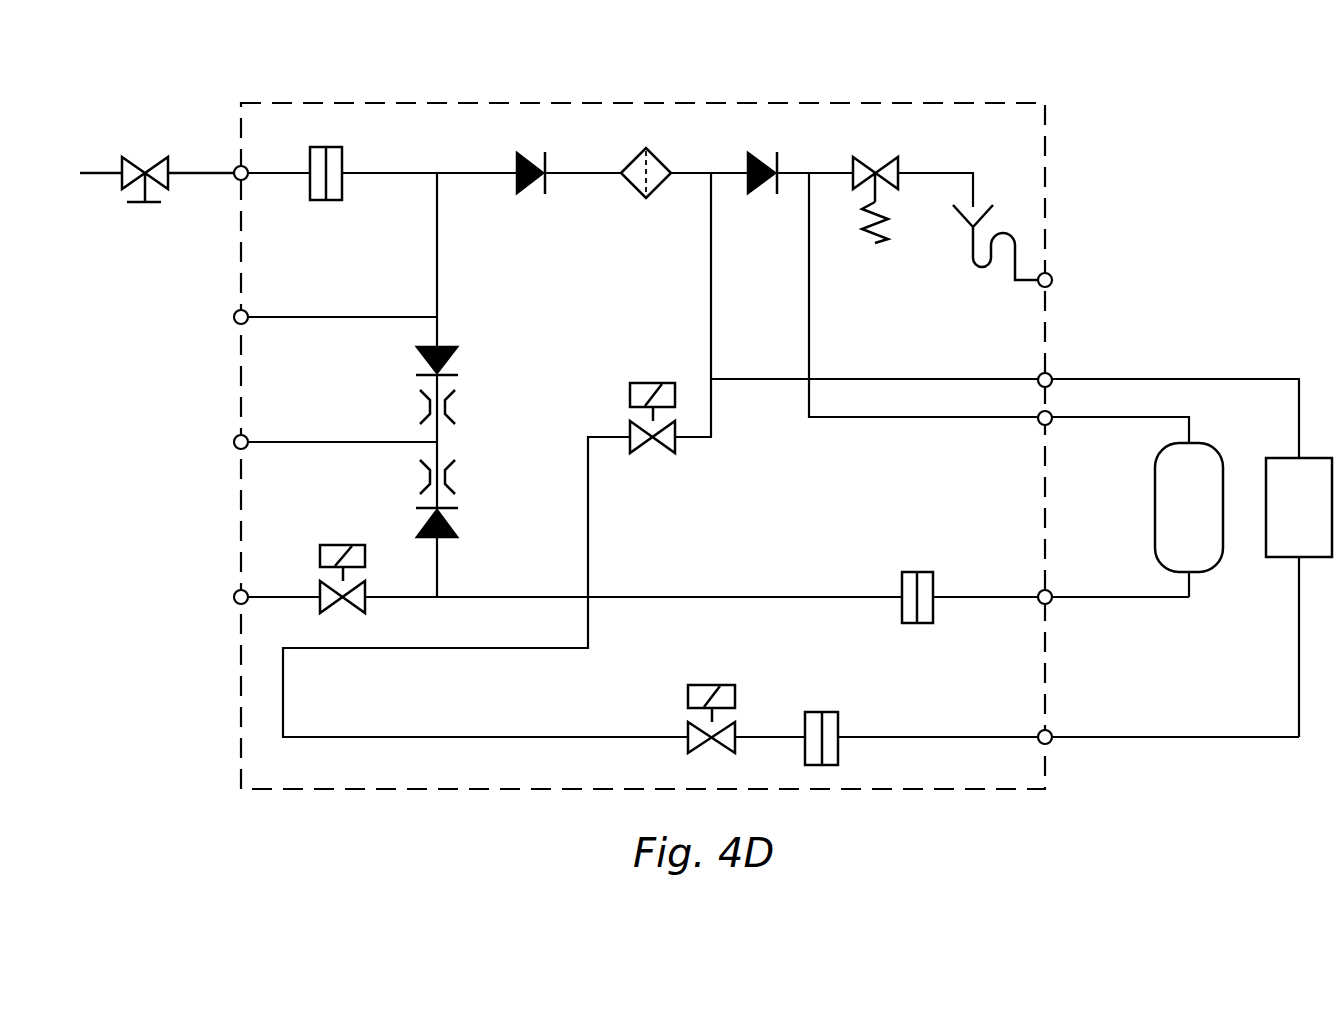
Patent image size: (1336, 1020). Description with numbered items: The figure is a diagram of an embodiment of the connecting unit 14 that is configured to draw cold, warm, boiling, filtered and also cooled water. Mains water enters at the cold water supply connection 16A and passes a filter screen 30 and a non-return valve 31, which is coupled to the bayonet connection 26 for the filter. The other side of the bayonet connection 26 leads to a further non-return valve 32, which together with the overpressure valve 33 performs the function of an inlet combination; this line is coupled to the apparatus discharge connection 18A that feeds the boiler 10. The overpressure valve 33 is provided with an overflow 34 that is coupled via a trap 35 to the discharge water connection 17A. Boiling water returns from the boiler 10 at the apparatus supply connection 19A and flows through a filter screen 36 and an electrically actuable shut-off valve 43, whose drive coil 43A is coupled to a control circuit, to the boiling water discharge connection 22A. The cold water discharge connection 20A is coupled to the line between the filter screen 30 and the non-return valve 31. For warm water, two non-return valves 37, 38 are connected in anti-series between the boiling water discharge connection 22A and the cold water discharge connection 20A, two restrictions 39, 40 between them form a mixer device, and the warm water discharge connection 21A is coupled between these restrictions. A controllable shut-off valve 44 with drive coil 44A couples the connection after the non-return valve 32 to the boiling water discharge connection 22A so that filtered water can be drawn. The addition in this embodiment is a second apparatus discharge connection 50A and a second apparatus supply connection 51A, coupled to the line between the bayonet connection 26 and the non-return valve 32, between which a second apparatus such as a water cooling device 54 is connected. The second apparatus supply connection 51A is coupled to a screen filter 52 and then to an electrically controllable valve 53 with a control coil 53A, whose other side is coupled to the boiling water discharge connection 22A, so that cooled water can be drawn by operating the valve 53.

The connecting unit 14 is at (1227, 143).
The cold water supply connection 16A is at (236, 178).
The filter screen 30 is at (328, 147).
The non-return valve 31 is at (530, 153).
The bayonet connection 26 is at (650, 148).
The non-return valve 32 is at (763, 153).
The overpressure valve 33 is at (876, 157).
The overflow 34 is at (990, 210).
The trap 35 is at (982, 268).
The discharge water connection 17A is at (1052, 280).
The cold water discharge connection 20A is at (236, 322).
The warm water discharge connection 21A is at (236, 447).
The boiling water discharge connection 22A is at (236, 602).
The non-return valve 38 is at (453, 355).
The restriction 40 is at (455, 407).
The restriction 39 is at (455, 477).
The non-return valve 37 is at (455, 528).
The drive coil 43A is at (343, 545).
The electrically actuable shut-off valve 43 is at (320, 590).
The drive coil 44A is at (653, 383).
The controllable shut-off valve 44 is at (675, 445).
The filter screen 36 is at (917, 572).
The control coil 53A is at (712, 685).
The electrically controllable valve 53 is at (688, 730).
The screen filter 52 is at (822, 712).
The second apparatus discharge connection 50A is at (1050, 374).
The apparatus discharge connection 18A is at (1050, 425).
The apparatus supply connection 19A is at (1050, 604).
The second apparatus supply connection 51A is at (1050, 744).
The boiler 10 is at (1173, 517).
The water cooling device 54 is at (1283, 517).